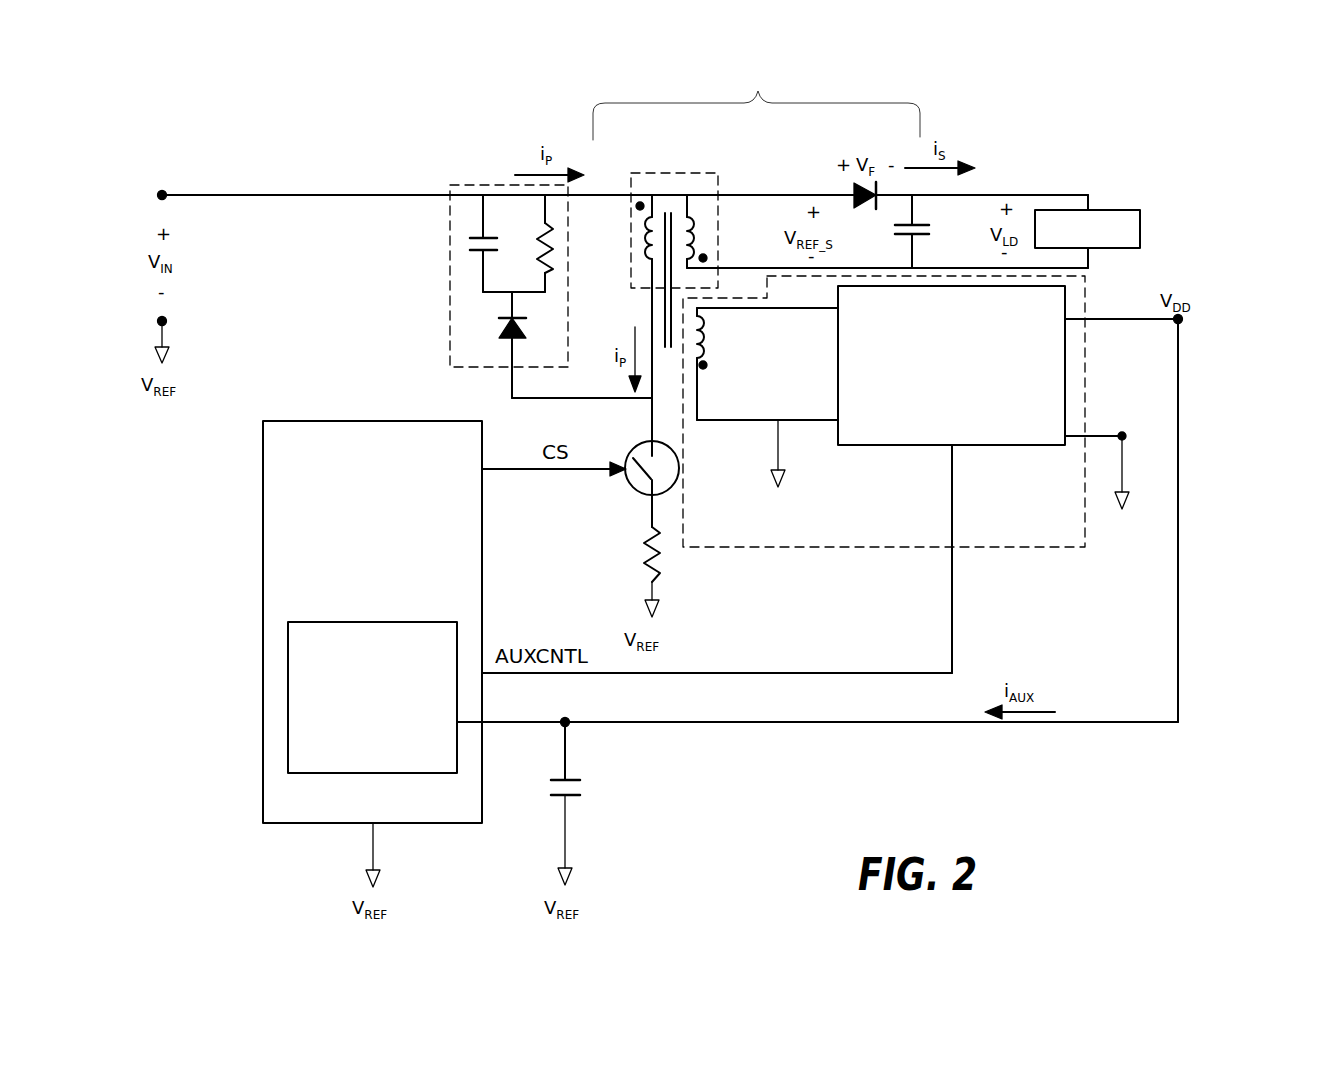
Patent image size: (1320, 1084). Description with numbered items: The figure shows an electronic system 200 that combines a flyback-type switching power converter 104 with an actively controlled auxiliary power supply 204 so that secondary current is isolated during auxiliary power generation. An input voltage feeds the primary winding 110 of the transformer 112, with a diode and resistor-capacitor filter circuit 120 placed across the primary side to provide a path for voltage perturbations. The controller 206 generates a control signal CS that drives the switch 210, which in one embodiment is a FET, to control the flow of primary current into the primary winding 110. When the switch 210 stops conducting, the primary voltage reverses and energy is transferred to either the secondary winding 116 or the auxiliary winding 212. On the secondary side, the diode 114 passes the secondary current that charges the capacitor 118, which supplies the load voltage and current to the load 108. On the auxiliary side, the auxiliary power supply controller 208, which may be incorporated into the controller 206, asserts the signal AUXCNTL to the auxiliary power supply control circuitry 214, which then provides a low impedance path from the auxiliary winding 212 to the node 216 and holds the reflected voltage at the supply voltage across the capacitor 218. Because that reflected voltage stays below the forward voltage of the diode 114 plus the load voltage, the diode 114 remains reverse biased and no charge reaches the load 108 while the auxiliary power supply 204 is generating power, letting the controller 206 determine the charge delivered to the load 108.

The electronic system 200 is at (1226, 160).
The flyback-type switching power converter 104 is at (756, 98).
The load 108 is at (1141, 236).
The primary winding 110 is at (645, 230).
The transformer 112 is at (834, 276).
The diode 114 is at (854, 193).
The secondary winding 116 is at (695, 248).
The capacitor 118 is at (931, 228).
The diode and resistor-capacitor filter circuit 120 is at (450, 286).
The auxiliary power supply 204 is at (990, 547).
The controller 206 is at (396, 514).
The auxiliary power supply controller 208 is at (392, 736).
The switch 210 is at (628, 490).
The auxiliary winding 212 is at (706, 350).
The auxiliary power supply control circuitry 214 is at (969, 416).
The node 216 is at (568, 726).
The capacitor 218 is at (570, 800).